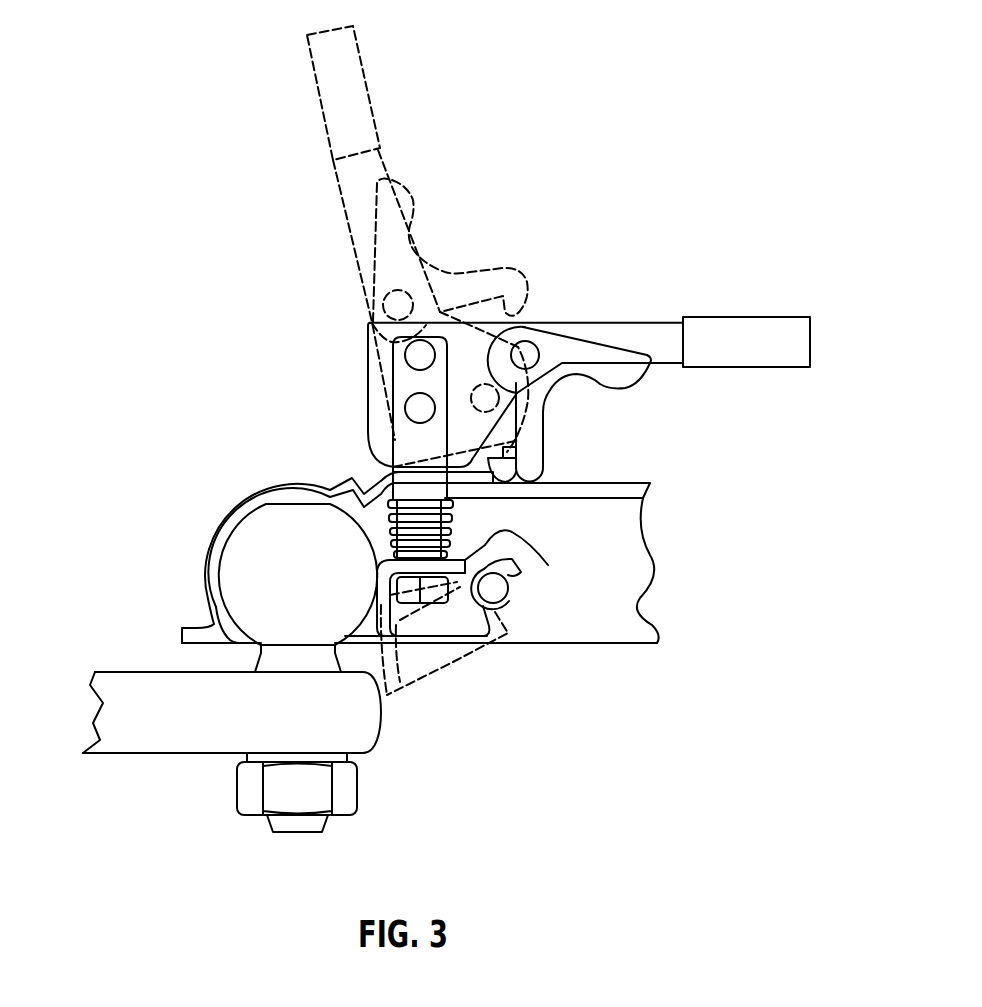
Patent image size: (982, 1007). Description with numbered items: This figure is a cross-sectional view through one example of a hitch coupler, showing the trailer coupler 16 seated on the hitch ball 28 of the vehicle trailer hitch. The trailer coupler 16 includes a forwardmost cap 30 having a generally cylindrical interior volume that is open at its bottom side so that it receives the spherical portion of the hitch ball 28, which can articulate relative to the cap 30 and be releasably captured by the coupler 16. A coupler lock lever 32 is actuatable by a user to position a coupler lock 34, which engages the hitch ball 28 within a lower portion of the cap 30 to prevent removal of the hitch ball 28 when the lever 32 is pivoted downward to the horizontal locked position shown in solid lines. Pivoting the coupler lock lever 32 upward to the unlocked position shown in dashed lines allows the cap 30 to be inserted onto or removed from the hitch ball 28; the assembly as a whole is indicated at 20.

The trailer coupler 16 is at (598, 483).
The clamp assembly 20 is at (147, 348).
The hitch ball 28 is at (262, 570).
The cap 30 is at (265, 490).
The coupler lock lever 32 is at (738, 317).
The coupler lock 34 is at (455, 662).